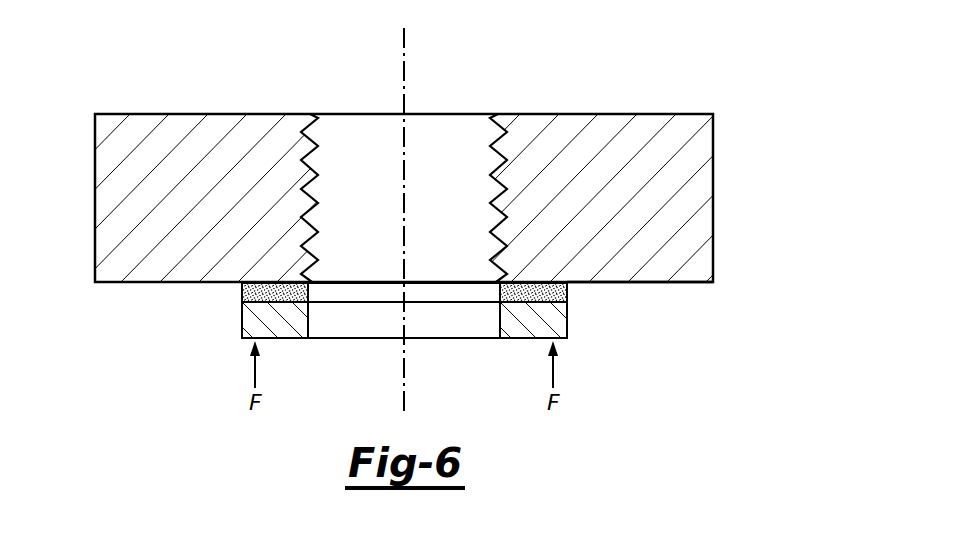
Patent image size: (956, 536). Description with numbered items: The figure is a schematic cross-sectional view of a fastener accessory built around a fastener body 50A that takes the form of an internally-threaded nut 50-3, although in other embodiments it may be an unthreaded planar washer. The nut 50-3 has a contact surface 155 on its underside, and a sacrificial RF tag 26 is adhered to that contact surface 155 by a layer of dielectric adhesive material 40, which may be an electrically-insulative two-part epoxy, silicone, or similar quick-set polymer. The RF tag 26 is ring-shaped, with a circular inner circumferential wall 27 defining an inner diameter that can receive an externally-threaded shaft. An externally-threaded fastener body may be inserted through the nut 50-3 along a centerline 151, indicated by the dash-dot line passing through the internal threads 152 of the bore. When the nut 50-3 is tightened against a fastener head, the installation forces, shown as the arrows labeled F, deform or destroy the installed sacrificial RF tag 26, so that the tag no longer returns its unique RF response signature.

The fastener body 50A is at (437, 217).
The internally-threaded nut 50-3 is at (110, 202).
The threaded bore 152 is at (328, 134).
The centerline 151 is at (404, 54).
The contact surface 155 is at (683, 283).
The sacrificial RF tag 26 is at (360, 350).
The inner circumferential wall 27 is at (308, 328).
The dielectric adhesive material 40 is at (560, 291).